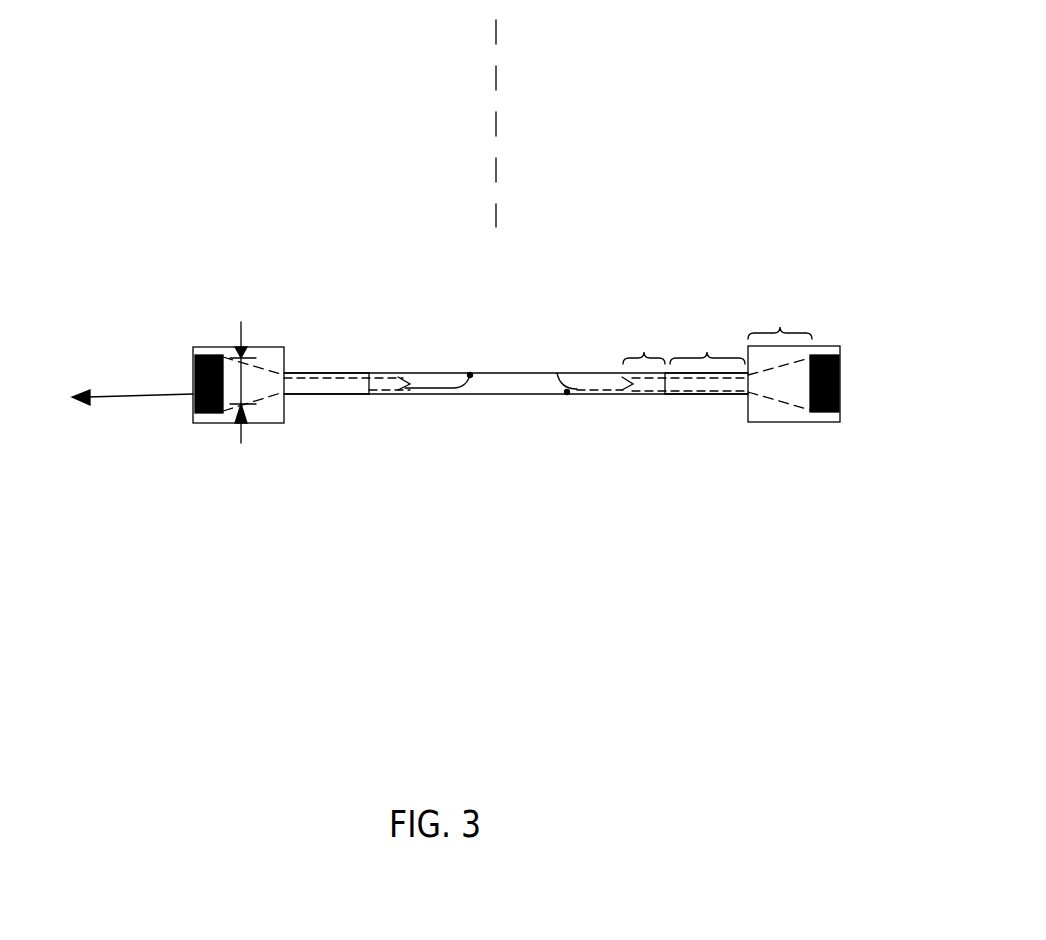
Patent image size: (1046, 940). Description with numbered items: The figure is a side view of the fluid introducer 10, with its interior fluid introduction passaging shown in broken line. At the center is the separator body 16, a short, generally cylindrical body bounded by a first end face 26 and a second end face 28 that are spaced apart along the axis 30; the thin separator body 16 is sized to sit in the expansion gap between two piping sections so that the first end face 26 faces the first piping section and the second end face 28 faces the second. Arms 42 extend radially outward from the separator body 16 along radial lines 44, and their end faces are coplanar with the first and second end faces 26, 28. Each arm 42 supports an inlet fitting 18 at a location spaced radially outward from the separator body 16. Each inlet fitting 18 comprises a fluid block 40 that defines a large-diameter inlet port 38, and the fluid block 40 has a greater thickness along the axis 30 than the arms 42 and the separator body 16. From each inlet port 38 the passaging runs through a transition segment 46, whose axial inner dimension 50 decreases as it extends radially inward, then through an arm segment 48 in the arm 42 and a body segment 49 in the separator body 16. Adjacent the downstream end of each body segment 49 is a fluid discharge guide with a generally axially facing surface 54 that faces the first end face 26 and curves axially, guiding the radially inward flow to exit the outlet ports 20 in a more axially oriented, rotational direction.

The fluid introducer 10 is at (726, 194).
The separator body 16 is at (537, 382).
The inlet fitting 18 is at (850, 385).
The outlet port 20 is at (444, 373).
The first end face 26 is at (510, 373).
The second end face 28 is at (503, 394).
The axis 30 is at (496, 130).
The inlet port 38 is at (843, 400).
The fluid block 40 is at (277, 412).
The arm 42 is at (302, 395).
The radial line 44 is at (120, 396).
The transition segment 46 is at (780, 319).
The arm segment 48 is at (707, 347).
The body segment 49 is at (644, 347).
The axial inner dimension 50 is at (242, 338).
The generally axially facing surface 54 is at (470, 373).